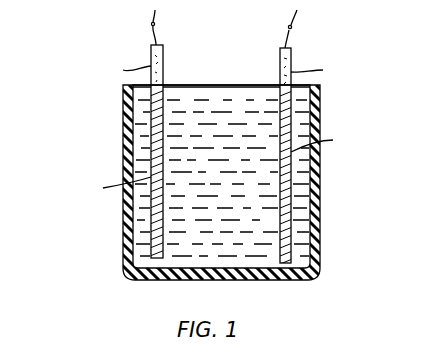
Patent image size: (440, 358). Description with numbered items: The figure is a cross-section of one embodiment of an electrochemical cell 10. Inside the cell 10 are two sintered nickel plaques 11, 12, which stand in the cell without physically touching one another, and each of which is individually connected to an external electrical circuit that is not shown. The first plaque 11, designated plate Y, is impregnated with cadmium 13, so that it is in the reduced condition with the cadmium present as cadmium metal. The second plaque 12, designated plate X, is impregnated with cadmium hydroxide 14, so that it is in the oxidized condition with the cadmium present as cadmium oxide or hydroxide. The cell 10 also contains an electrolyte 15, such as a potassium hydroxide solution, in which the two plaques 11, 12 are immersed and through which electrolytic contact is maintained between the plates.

The electrochemical cell 10 is at (320, 195).
The sintered nickel plaque 11 is at (163, 43).
The sintered nickel plaque 12 is at (289, 52).
The cadmium 13 is at (151, 163).
The cadmium hydroxide 14 is at (312, 168).
The electrolyte 15 is at (257, 135).